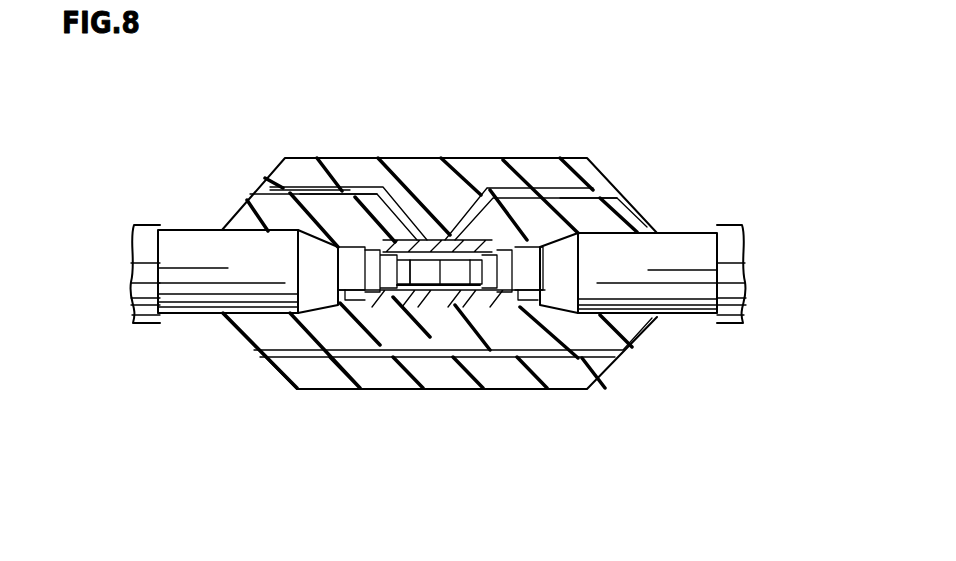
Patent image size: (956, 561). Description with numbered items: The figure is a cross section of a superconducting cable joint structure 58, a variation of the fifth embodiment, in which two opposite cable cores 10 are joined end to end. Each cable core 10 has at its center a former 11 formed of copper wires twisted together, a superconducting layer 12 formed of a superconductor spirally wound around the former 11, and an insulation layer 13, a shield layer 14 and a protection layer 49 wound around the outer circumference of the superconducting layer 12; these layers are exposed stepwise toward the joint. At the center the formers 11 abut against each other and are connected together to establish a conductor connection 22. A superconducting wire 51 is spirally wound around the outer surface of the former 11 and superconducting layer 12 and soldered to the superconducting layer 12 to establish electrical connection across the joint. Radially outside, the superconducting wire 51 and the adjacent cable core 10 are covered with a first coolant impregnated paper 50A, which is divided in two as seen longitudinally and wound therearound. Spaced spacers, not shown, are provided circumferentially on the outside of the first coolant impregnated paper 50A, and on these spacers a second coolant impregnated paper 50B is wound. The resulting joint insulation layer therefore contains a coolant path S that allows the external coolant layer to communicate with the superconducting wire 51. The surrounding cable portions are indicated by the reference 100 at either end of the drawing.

The cable core 10 is at (190, 248).
The former 11 is at (427, 290).
The superconducting layer 12 is at (345, 292).
The insulation layer 13 is at (317, 300).
The shield layer 14 is at (195, 292).
The conductor connection 22 is at (437, 284).
The protection layer 49 is at (138, 306).
The first coolant impregnated paper 50A is at (593, 218).
The second coolant impregnated paper 50B is at (548, 172).
The superconducting wire 51 is at (441, 248).
The superconducting cable joint structure 58 is at (731, 59).
The pipe 100 is at (113, 242).
The coolant path S is at (347, 203).